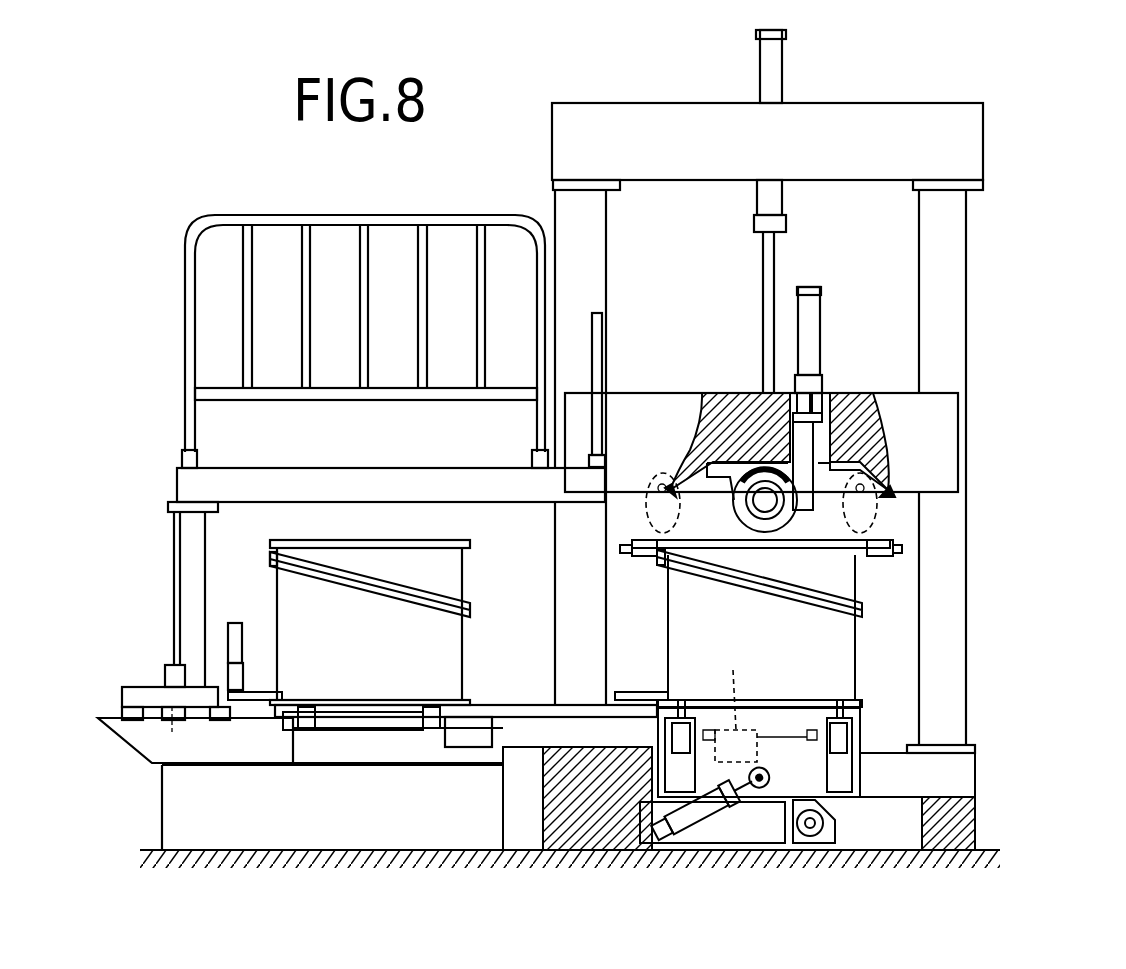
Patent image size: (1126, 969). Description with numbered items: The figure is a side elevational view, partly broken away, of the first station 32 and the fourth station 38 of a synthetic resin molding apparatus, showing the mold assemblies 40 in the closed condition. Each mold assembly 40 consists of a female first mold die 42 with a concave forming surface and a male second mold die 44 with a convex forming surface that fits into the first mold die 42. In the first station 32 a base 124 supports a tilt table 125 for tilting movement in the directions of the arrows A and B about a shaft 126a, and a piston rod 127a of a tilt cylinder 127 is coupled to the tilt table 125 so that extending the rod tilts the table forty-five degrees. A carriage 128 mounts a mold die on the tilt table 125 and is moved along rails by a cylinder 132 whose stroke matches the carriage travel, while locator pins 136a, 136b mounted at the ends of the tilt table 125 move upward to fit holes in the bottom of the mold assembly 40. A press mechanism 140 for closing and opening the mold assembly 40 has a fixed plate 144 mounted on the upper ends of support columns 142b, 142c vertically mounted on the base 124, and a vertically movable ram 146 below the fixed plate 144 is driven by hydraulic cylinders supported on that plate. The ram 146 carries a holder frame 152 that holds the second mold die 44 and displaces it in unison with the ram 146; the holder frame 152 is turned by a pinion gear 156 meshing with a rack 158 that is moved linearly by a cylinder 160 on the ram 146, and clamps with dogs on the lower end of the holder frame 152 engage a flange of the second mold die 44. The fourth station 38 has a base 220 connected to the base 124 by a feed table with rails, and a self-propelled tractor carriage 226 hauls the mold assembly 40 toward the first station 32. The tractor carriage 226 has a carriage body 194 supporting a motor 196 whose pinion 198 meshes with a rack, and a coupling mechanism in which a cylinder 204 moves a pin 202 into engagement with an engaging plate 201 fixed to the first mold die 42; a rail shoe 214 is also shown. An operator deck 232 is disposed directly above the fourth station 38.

The first station 32 is at (1002, 347).
The fourth station 38 is at (167, 378).
The mold assembly 40 is at (665, 612).
The first mold die 42 is at (840, 680).
The second mold die 44 is at (842, 583).
The base 124 is at (592, 835).
The tilt table 125 is at (858, 775).
The shaft 126a is at (810, 845).
The tilt cylinder 127 is at (700, 835).
The piston rod 127a is at (735, 800).
The carriage 128 is at (786, 722).
The cylinder 132 is at (760, 705).
The locator pin 136a is at (680, 700).
The locator pin 136b is at (843, 712).
The press mechanism 140 is at (988, 203).
The support column 142b is at (945, 280).
The support column 142c is at (595, 280).
The fixed plate 144 is at (855, 165).
The ram 146 is at (648, 372).
The holder frame 152 is at (878, 512).
The pinion gear 156 is at (740, 500).
The rack 158 is at (825, 400).
The cylinder 160 is at (822, 332).
The carriage body 194 is at (135, 700).
The motor 196 is at (172, 663).
The pinion 198 is at (173, 731).
The engaging plate 201 is at (282, 695).
The pin 202 is at (236, 712).
The cylinder 204 is at (240, 670).
The rail shoe 214 is at (428, 725).
The base 220 is at (172, 800).
The tractor carriage 226 is at (128, 667).
The operator deck 232 is at (345, 488).
The arrow A is at (875, 655).
The arrow B is at (864, 658).